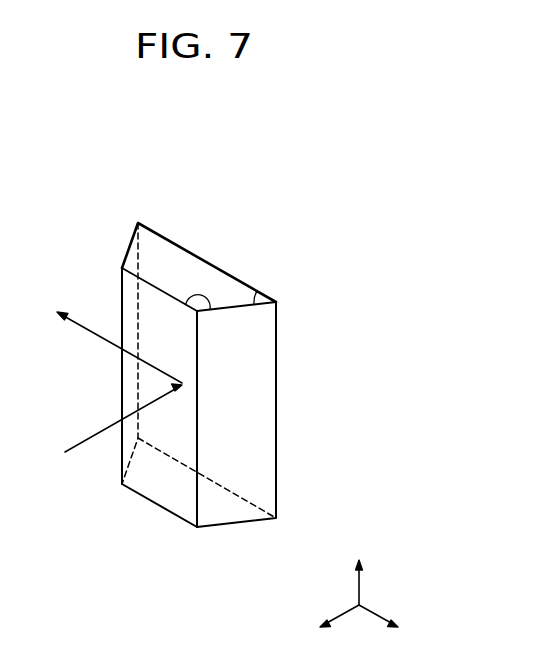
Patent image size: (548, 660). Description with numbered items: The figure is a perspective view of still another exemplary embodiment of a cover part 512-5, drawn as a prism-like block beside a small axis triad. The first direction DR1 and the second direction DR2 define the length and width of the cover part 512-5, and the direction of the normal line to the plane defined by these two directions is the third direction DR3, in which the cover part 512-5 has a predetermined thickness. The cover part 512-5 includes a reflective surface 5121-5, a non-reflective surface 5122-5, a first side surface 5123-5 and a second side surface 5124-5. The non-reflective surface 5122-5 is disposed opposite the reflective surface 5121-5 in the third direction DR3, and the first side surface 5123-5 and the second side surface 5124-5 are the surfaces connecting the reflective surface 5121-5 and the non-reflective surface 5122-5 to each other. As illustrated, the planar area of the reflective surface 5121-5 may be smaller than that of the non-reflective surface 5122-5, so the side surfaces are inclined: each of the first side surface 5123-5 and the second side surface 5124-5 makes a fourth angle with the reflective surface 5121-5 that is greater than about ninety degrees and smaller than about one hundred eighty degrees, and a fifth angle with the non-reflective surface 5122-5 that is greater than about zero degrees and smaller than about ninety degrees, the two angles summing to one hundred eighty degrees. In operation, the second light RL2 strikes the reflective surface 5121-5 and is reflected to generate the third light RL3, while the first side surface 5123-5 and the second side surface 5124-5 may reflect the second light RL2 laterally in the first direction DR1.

The cover part 512-5 is at (224, 361).
The reflective surface 5121-5 is at (155, 479).
The non-reflective surface 5122-5 is at (175, 266).
The first side surface 5123-5 is at (258, 377).
The second side surface 5124-5 is at (133, 262).
The second light RL2 is at (107, 424).
The third light RL3 is at (119, 342).
The first direction DR1 is at (395, 622).
The second direction DR2 is at (359, 573).
The third direction DR3 is at (323, 622).